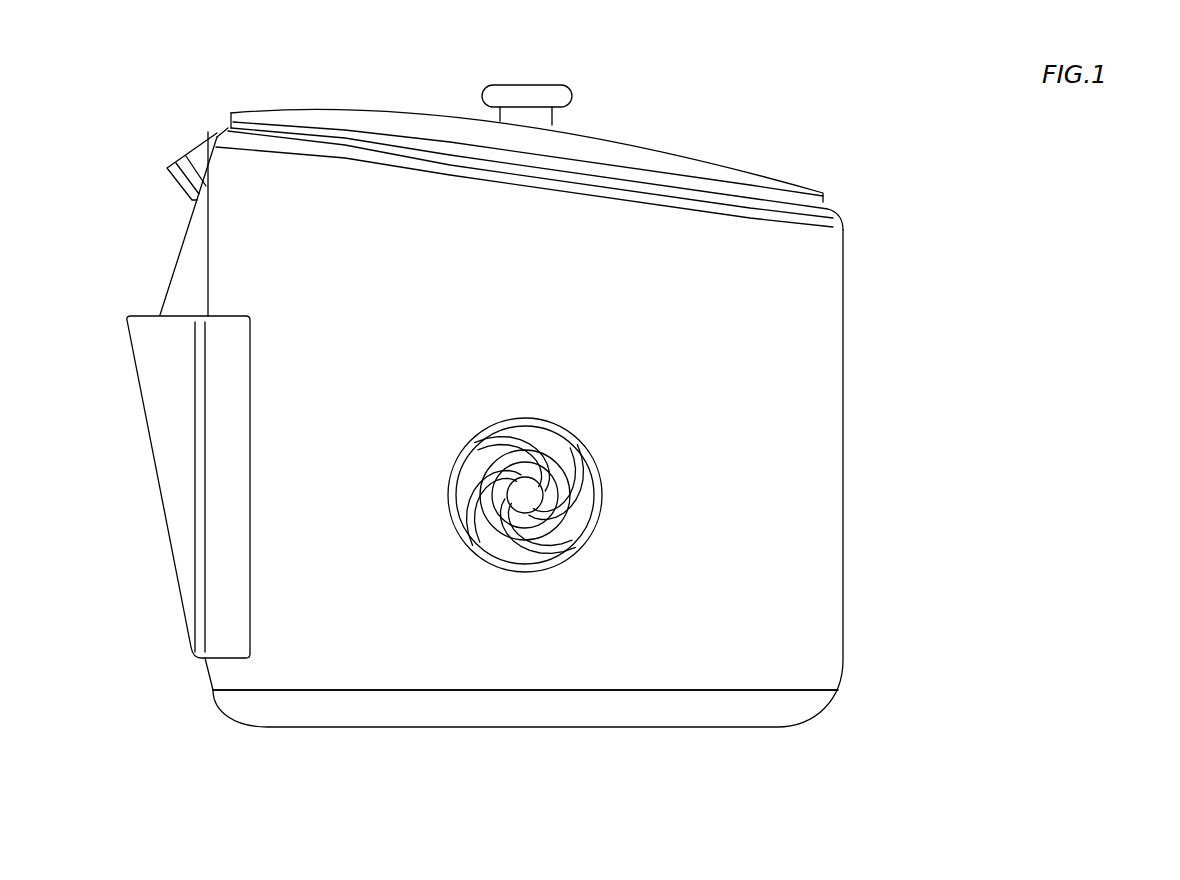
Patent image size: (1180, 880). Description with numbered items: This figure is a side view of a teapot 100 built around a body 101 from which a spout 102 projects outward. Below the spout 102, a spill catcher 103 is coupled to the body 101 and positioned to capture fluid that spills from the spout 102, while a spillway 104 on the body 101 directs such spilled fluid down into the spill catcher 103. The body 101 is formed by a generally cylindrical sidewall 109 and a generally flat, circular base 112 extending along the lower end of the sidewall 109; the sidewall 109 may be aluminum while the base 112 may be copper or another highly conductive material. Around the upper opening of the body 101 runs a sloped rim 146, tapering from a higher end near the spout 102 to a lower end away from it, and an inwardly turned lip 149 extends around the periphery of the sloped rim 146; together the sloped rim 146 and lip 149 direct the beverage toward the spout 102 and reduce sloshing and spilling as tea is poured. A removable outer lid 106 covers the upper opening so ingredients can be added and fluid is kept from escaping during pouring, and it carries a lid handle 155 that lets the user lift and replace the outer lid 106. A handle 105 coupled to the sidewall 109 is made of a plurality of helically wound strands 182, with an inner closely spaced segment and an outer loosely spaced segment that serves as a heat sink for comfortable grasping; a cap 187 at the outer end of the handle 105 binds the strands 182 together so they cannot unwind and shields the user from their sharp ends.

The teapot 100 is at (853, 67).
The body 101 is at (817, 327).
The spout 102 is at (193, 160).
The spill catcher 103 is at (163, 437).
The spillway 104 is at (182, 280).
The handle 105 is at (565, 418).
The removable outer lid 106 is at (612, 148).
The sidewall 109 is at (553, 366).
The base 112 is at (477, 715).
The sloped rim 146 is at (323, 133).
The inwardly turned lip 149 is at (228, 130).
The lid handle 155 is at (573, 80).
The helically wound strands 182 is at (598, 478).
The cap 187 is at (530, 502).